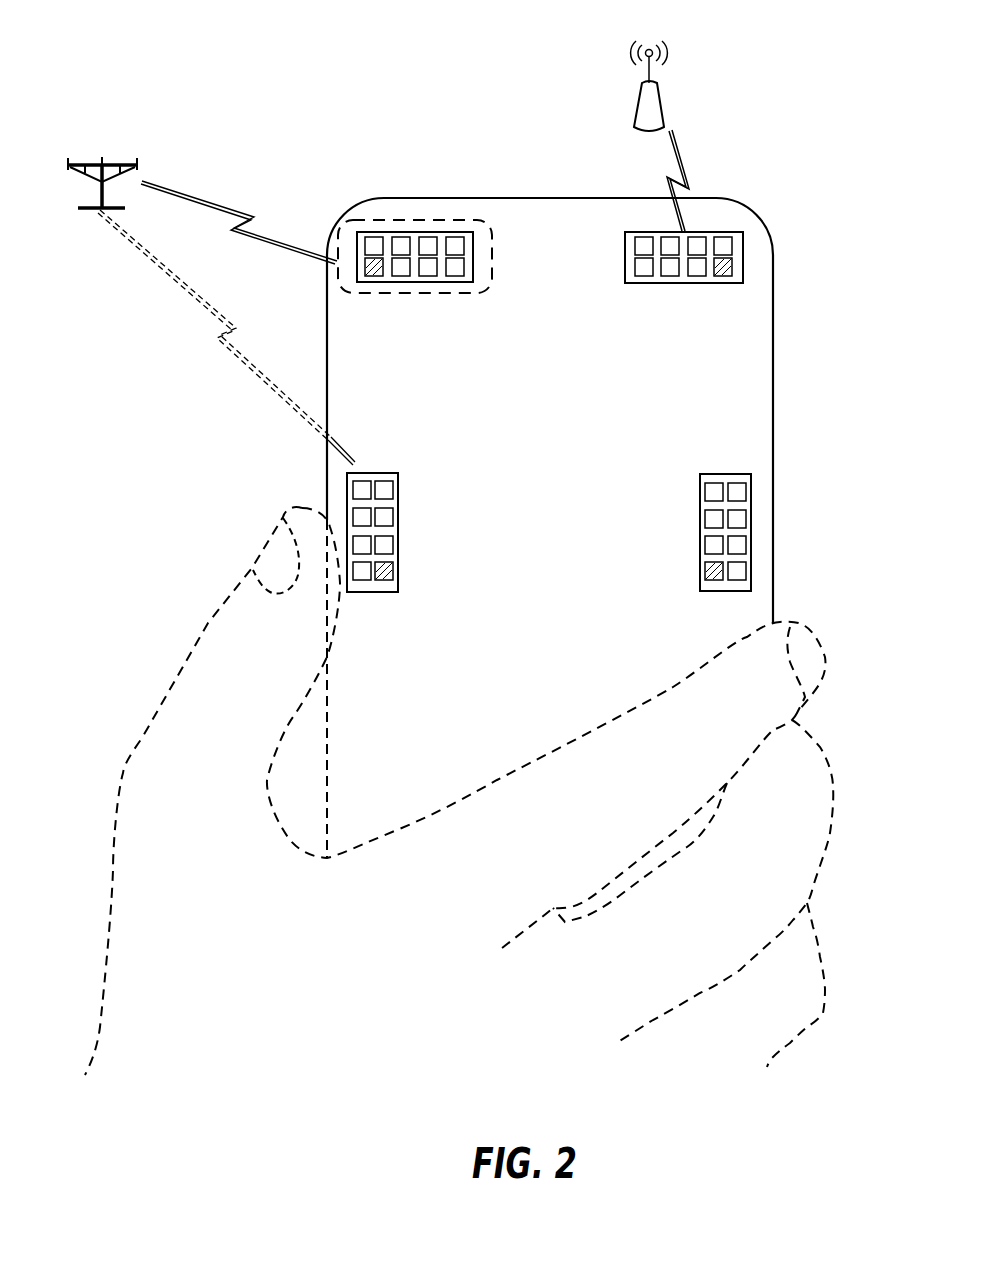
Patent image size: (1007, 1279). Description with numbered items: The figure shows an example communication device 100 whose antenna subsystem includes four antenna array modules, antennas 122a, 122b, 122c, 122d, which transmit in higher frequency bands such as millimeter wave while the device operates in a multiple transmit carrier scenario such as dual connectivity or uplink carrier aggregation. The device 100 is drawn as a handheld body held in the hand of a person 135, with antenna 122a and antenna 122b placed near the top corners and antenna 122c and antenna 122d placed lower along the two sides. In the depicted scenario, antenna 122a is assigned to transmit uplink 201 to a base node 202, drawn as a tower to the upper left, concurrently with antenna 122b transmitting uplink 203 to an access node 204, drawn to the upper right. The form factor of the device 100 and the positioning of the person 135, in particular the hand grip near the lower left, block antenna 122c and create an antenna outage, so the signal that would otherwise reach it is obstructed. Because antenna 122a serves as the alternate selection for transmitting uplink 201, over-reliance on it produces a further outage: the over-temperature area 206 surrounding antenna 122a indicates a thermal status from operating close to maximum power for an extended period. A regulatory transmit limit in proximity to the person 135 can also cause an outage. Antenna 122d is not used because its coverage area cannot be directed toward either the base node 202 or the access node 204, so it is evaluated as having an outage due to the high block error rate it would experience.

The communication device 100 is at (325, 378).
The antenna 122a is at (400, 232).
The antenna 122b is at (743, 245).
The antenna 122c is at (352, 470).
The antenna 122d is at (751, 546).
The person 135 is at (205, 622).
The uplink 201 is at (222, 198).
The base node 202 is at (70, 212).
The uplink 203 is at (683, 168).
The access node 204 is at (664, 108).
The over-temperature area 206 is at (372, 218).